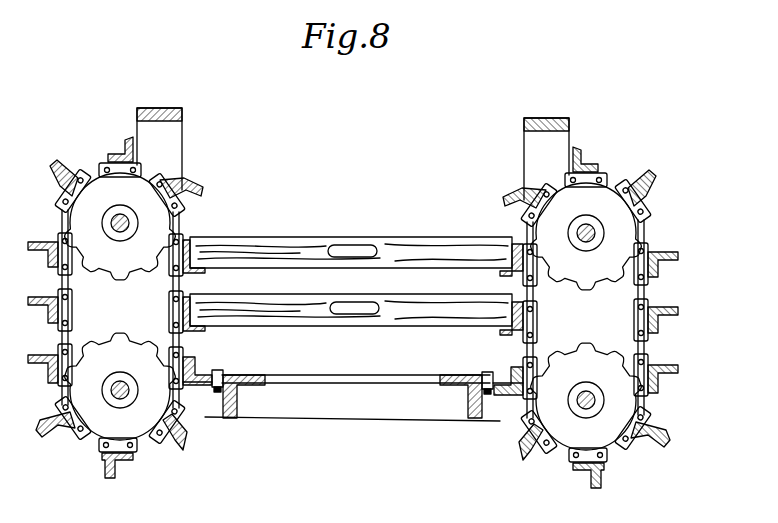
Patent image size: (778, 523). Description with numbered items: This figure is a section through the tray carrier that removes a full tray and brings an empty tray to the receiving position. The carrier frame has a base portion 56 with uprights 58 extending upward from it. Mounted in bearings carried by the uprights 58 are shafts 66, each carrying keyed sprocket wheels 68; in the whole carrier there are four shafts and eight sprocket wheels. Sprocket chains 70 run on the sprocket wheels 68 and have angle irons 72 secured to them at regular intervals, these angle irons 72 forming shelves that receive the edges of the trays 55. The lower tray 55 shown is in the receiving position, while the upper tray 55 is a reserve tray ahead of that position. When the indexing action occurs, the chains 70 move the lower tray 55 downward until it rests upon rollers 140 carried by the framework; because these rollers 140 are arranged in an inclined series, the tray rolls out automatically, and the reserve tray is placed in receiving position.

The receiving tray 55 is at (332, 224).
The base portion 56 is at (345, 405).
The uprights 58 is at (173, 143).
The shafts 66 is at (112, 223).
The sprocket wheels 68 is at (115, 345).
The sprocket chains 70 is at (62, 284).
The angle irons 72 is at (200, 193).
The rollers 140 is at (214, 395).